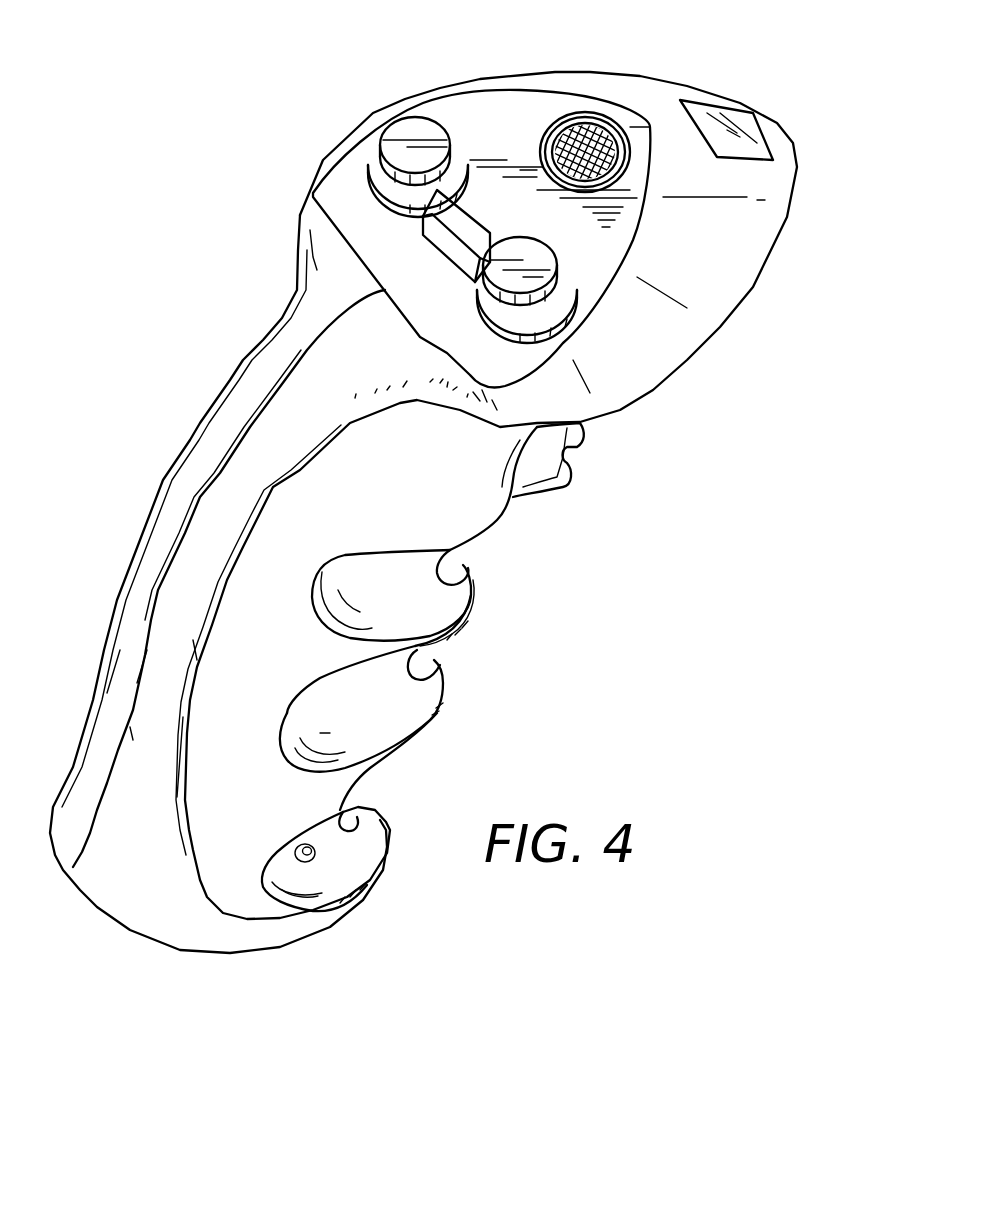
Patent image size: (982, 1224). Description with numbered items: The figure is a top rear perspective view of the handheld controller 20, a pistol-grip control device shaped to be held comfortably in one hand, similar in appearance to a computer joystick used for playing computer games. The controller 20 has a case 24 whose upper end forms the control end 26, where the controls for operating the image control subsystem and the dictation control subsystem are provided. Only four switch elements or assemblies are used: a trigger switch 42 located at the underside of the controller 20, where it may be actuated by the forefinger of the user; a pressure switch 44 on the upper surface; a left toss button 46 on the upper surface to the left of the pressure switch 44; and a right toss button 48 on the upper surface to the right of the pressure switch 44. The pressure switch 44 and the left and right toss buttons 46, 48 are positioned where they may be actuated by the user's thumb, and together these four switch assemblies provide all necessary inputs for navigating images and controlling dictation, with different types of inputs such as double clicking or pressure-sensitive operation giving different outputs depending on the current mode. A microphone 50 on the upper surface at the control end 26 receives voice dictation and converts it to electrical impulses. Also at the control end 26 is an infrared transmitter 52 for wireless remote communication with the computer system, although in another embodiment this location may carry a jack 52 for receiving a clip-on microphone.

The controller 20 is at (160, 455).
The case 24 is at (250, 380).
The control end 26 is at (483, 113).
The trigger switch 42 is at (553, 460).
The pressure switch 44 is at (423, 235).
The left toss button 46 is at (407, 133).
The right toss button 48 is at (530, 278).
The microphone 50 is at (573, 140).
The infrared transmitter 52 is at (753, 113).